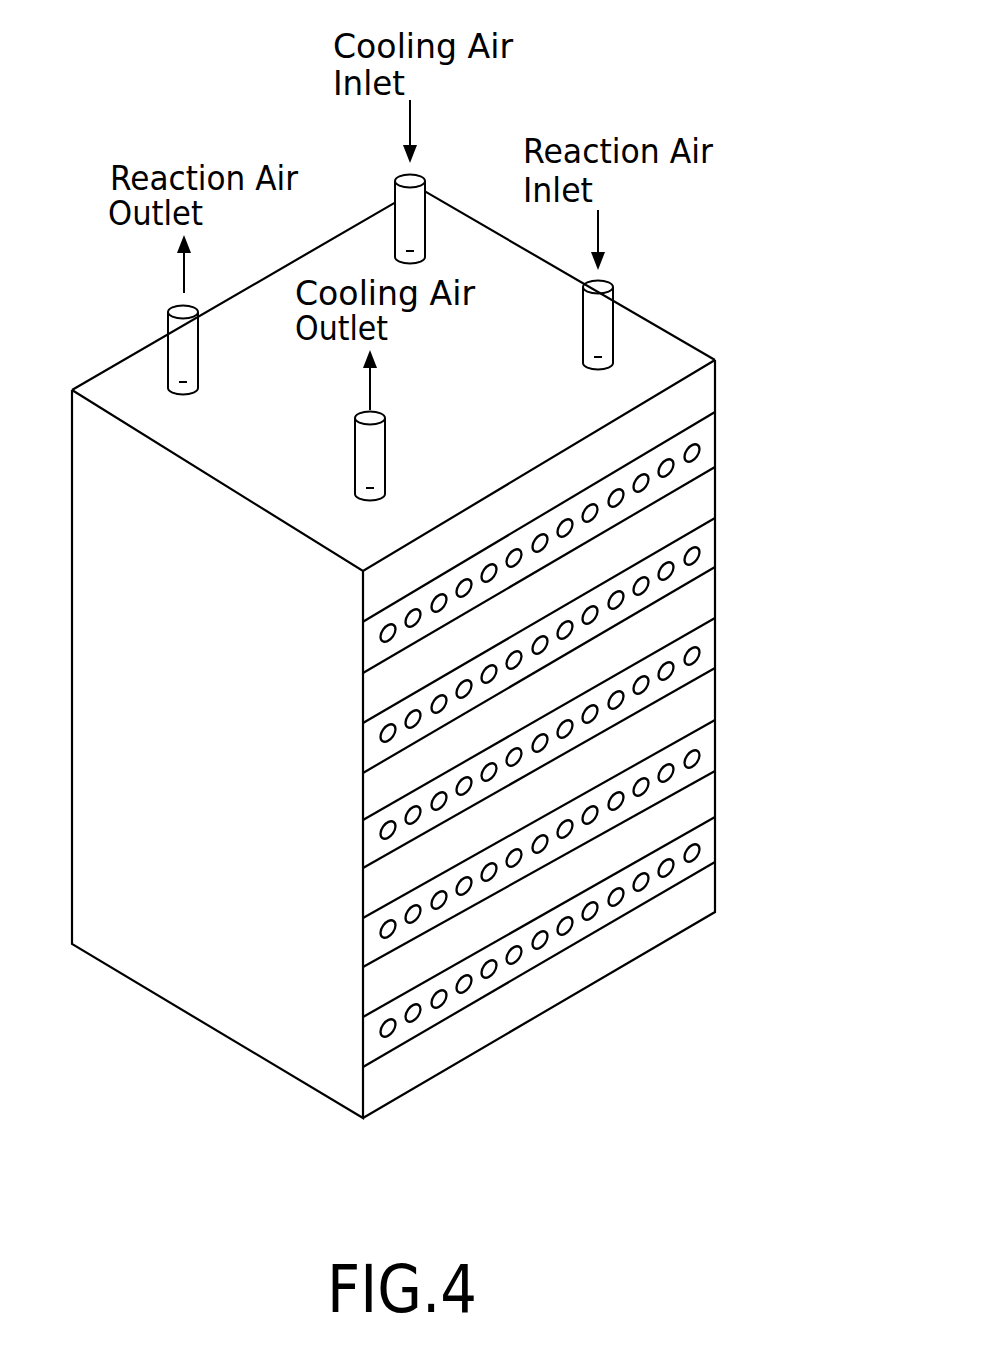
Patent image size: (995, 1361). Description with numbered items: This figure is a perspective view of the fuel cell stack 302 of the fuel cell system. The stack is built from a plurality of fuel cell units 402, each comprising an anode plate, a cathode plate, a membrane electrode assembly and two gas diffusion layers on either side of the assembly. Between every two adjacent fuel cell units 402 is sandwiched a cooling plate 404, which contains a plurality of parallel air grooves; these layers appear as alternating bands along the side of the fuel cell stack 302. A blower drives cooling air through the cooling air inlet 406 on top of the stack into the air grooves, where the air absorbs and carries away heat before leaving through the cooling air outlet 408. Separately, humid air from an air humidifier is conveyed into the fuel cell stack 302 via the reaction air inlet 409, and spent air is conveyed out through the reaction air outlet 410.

The fuel cell stack 302 is at (203, 1013).
The fuel cell unit 402 is at (716, 385).
The cooling plate 404 is at (716, 439).
The cooling air inlet 406 is at (395, 220).
The cooling air outlet 408 is at (356, 462).
The reaction air inlet 409 is at (613, 328).
The reaction air outlet 410 is at (170, 348).